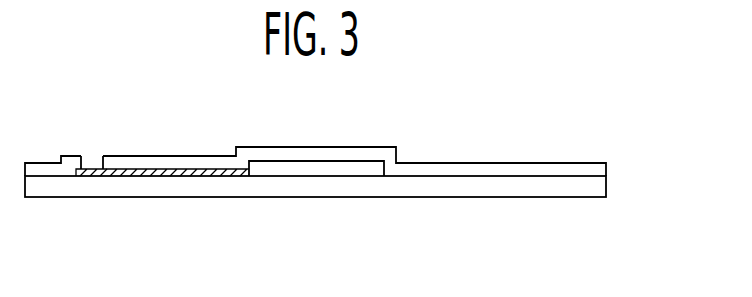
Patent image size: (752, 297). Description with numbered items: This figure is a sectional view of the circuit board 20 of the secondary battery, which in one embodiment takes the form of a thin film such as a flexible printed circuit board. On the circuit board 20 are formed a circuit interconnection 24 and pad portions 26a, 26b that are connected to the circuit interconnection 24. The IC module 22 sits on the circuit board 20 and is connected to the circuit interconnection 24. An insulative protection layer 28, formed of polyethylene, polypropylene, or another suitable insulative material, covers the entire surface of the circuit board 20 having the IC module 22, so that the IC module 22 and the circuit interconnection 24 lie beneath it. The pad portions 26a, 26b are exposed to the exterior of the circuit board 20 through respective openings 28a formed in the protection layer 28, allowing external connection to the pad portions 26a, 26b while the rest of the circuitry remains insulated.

The circuit board 20 is at (598, 188).
The IC module 22 is at (307, 165).
The circuit interconnection 24 is at (202, 170).
The pad portion 26a is at (87, 228).
The pad portion 26b is at (92, 170).
The protection layer 28 is at (572, 171).
The opening 28a is at (87, 150).